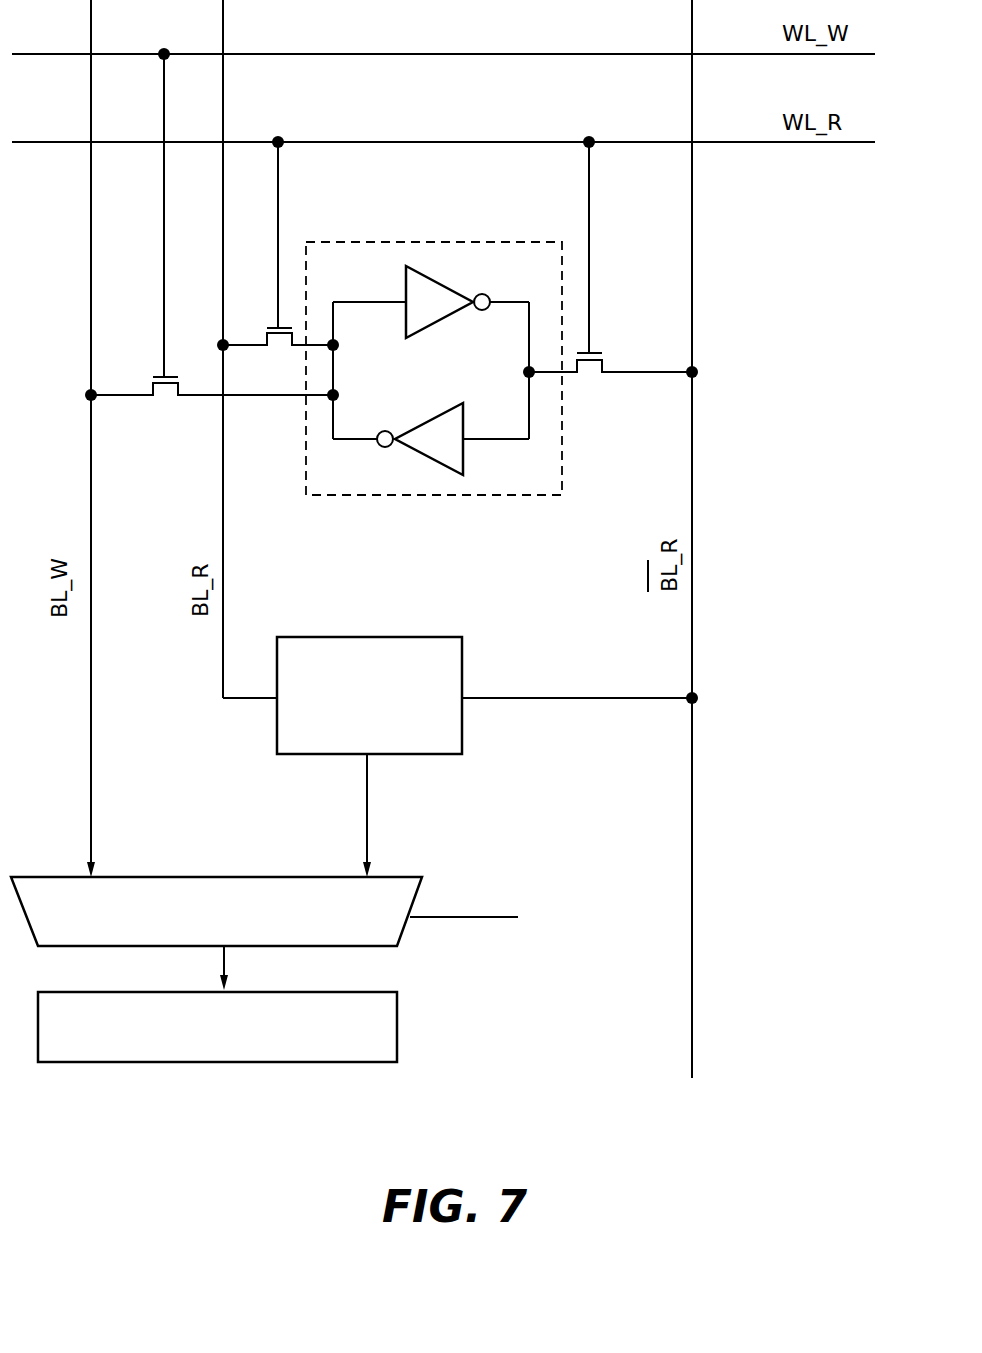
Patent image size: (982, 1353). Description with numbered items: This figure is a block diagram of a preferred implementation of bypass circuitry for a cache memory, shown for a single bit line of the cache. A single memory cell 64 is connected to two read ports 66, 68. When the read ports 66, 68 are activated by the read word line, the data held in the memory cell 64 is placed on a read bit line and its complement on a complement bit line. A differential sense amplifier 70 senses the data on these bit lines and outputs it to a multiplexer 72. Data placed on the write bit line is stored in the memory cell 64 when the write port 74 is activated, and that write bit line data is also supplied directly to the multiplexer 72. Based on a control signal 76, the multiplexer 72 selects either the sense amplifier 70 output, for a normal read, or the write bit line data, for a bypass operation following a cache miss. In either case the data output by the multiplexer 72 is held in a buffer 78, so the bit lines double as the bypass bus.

The memory cell 64 is at (508, 495).
The read port 66 is at (272, 320).
The read port 68 is at (609, 350).
The differential sense amplifier 70 is at (419, 637).
The multiplexer 72 is at (368, 946).
The write port 74 is at (173, 368).
The control signal 76 is at (490, 917).
The buffer 78 is at (372, 1062).